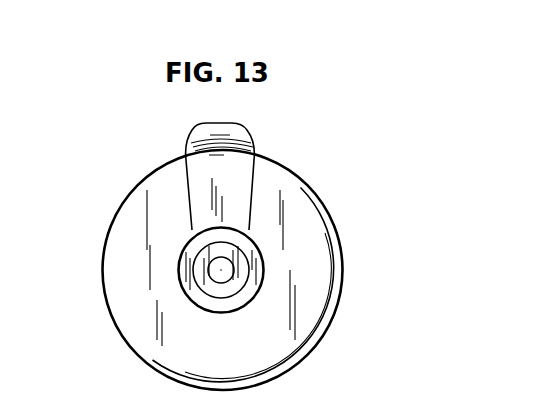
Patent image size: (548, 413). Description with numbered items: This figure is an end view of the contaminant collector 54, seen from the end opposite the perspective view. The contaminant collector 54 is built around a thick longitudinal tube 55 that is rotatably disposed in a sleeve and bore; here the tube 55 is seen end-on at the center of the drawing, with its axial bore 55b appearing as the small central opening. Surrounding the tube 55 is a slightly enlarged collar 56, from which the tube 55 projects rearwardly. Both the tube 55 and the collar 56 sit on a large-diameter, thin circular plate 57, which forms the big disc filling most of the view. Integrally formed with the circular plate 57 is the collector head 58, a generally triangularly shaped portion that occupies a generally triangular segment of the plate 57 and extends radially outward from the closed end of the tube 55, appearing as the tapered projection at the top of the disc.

The contaminant collector 54 is at (312, 165).
The longitudinal tube 55 is at (250, 263).
The axial bore 55b is at (222, 281).
The collar 56 is at (178, 273).
The circular plate 57 is at (103, 251).
The collector head 58 is at (192, 136).